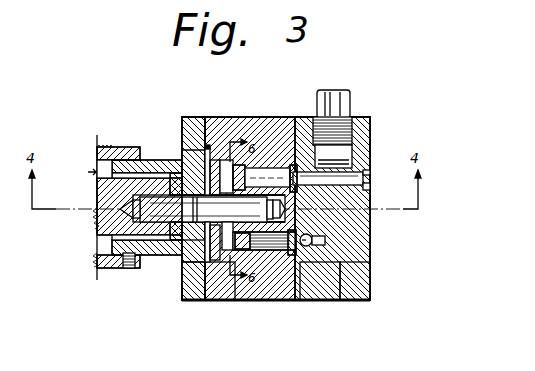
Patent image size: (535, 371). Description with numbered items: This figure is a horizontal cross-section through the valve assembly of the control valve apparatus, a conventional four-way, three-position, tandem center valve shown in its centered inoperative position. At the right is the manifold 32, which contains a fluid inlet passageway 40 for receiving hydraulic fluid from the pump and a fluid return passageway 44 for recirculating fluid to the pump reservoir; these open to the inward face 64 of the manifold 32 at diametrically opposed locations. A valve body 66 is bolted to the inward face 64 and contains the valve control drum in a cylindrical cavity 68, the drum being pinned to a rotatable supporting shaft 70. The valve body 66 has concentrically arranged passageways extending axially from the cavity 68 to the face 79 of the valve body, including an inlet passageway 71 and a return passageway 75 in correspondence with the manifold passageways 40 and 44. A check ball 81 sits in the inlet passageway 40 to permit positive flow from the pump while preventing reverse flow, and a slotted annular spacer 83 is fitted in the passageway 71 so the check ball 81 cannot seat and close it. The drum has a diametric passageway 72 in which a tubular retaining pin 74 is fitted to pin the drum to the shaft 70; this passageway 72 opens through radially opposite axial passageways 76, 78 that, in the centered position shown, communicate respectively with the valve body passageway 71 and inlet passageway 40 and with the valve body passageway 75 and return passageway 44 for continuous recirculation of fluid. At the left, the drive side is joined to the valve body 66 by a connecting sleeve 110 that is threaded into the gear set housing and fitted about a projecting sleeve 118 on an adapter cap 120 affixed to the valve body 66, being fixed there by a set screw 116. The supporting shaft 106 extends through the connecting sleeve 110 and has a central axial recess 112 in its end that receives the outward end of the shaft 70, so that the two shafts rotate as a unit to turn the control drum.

The manifold 32 is at (368, 280).
The fluid inlet passageway 40 is at (325, 243).
The fluid return passageway 44 is at (357, 180).
The inward face 64 is at (312, 300).
The valve body 66 is at (208, 300).
The cylindrical cavity 68 is at (213, 157).
The rotatable supporting shaft 70 is at (198, 262).
The inlet passageway of the valve body 71 is at (265, 290).
The diametric passageway 72 is at (190, 278).
The tubular retaining pin 74 is at (207, 180).
The return passageway of the valve body 75 is at (283, 138).
The axial passageway 76 is at (277, 177).
The axial passageway 78 is at (262, 280).
The face of the valve body 79 is at (293, 295).
The check ball 81 is at (313, 236).
The slotted annular spacer 83 is at (343, 303).
The supporting shaft 106 is at (98, 195).
The connecting sleeve 110 is at (130, 145).
The central axial recess 112 is at (95, 233).
The set screw 116 is at (128, 272).
The projecting sleeve 118 is at (148, 157).
The adapter cap 120 is at (183, 130).